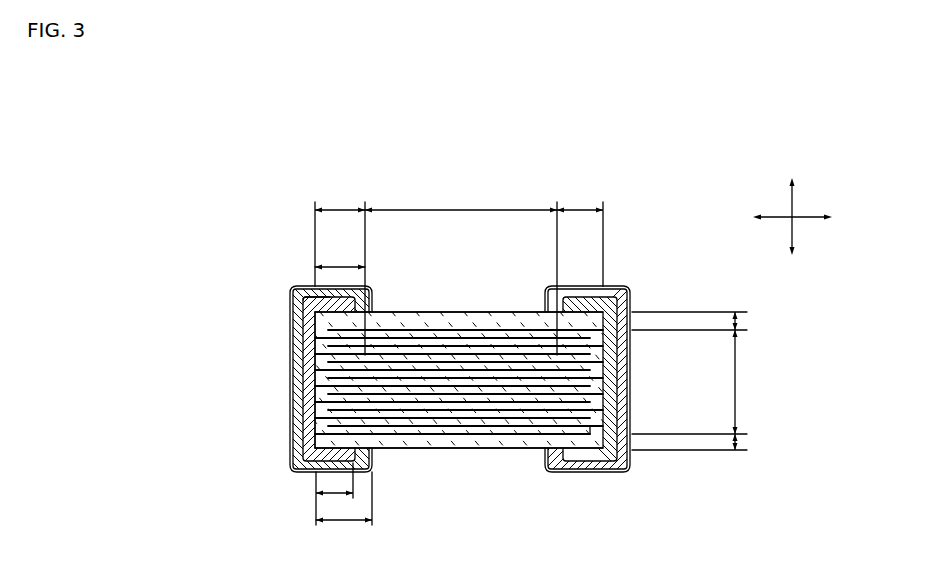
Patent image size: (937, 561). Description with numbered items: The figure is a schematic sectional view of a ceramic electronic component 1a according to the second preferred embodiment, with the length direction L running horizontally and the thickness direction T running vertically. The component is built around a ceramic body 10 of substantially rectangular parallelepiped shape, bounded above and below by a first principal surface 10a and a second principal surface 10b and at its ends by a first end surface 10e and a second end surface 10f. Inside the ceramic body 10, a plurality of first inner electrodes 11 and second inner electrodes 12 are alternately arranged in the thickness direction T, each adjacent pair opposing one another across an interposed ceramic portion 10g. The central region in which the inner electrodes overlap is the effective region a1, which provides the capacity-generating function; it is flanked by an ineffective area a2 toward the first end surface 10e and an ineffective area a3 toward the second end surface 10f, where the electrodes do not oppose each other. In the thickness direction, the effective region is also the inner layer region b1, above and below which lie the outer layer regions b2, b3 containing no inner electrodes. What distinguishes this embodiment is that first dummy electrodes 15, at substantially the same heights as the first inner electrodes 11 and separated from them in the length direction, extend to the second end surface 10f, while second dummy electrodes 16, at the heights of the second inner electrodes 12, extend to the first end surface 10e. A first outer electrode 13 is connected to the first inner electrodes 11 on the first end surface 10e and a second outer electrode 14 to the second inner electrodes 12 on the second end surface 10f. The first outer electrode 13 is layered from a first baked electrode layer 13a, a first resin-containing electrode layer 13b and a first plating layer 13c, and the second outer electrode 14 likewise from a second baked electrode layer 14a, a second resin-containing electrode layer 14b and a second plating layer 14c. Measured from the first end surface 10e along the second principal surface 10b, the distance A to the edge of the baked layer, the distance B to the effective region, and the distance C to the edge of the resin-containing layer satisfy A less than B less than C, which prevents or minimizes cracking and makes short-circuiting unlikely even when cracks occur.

The ceramic electronic component 1a is at (631, 264).
The ceramic body 10 is at (505, 303).
The first principal surface 10a is at (427, 312).
The second principal surface 10b is at (420, 450).
The first end surface 10e is at (313, 428).
The second end surface 10f is at (594, 404).
The ceramic portion 10g is at (469, 432).
The first inner electrodes 11 is at (410, 432).
The second inner electrodes 12 is at (505, 430).
The first outer electrode 13 is at (330, 380).
The first baked electrode layer 13a is at (305, 329).
The first resin-containing electrode layer 13b is at (297, 367).
The first plating layer 13c is at (292, 377).
The second outer electrode 14 is at (630, 380).
The second baked electrode layer 14a is at (632, 302).
The second resin-containing electrode layer 14b is at (628, 355).
The second plating layer 14c is at (630, 368).
The first dummy electrodes 15 is at (597, 426).
The second dummy electrodes 16 is at (297, 302).
The effective region a1 is at (461, 271).
The ineffective area a2 is at (340, 271).
The ineffective area a3 is at (580, 237).
The distance A is at (334, 494).
The distance B is at (340, 257).
The distance C is at (344, 498).
The inner layer region b1 is at (704, 382).
The outer layer region b2 is at (703, 320).
The outer layer region b3 is at (703, 439).
The thickness direction T is at (792, 198).
The length direction L is at (810, 218).